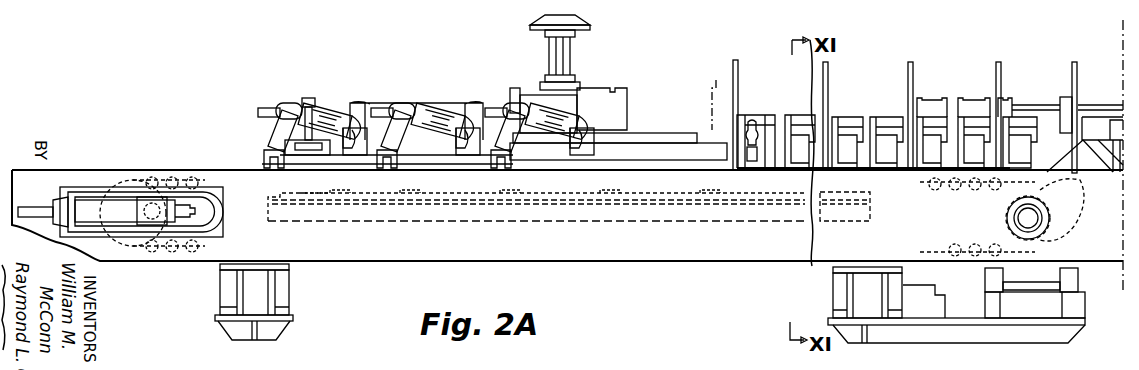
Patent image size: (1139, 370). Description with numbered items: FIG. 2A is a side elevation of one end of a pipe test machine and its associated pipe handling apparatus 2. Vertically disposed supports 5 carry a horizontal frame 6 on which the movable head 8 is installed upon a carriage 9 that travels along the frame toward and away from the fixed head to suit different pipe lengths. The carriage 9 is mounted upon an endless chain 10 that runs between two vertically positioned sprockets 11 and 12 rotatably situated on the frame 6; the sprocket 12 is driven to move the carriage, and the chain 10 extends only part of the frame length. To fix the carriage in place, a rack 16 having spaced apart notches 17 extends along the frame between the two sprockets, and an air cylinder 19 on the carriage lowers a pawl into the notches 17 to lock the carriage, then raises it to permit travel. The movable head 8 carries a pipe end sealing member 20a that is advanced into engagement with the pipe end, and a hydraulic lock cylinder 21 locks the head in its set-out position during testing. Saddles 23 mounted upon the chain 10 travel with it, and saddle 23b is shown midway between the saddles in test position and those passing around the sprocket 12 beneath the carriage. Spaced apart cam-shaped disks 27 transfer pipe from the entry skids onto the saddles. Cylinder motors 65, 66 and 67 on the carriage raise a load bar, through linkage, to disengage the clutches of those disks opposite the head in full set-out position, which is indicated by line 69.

The pipe handling apparatus 2 is at (925, 97).
The vertically disposed supports 5 is at (292, 288).
The horizontal frame 6 is at (97, 170).
The movable head 8 is at (493, 91).
The carriage 9 is at (672, 148).
The endless chain 10 is at (198, 178).
The sprocket 11 is at (136, 256).
The sprocket 12 is at (1006, 218).
The rack 16 is at (500, 222).
The notches 17 is at (566, 200).
The air cylinder 19 is at (306, 98).
The pipe end sealing member 20a is at (650, 72).
The hydraulic lock cylinder 21 is at (392, 103).
The saddle 23 is at (893, 117).
The saddle 23b is at (1018, 217).
The disks 27 is at (739, 80).
The cylinder motor 65 is at (536, 100).
The cylinder motor 66 is at (445, 107).
The cylinder motor 67 is at (332, 112).
The line 69 is at (716, 80).